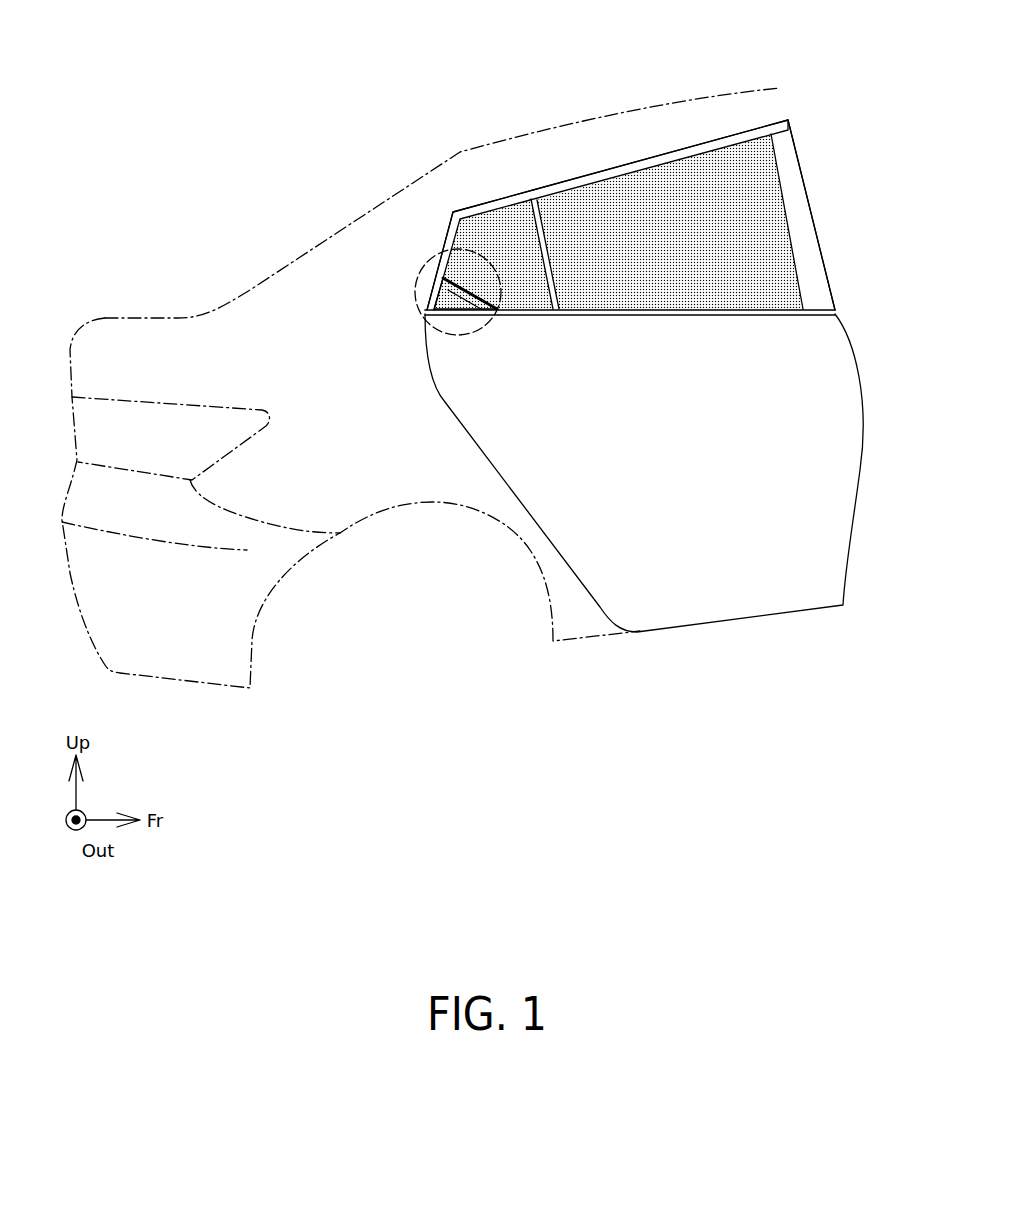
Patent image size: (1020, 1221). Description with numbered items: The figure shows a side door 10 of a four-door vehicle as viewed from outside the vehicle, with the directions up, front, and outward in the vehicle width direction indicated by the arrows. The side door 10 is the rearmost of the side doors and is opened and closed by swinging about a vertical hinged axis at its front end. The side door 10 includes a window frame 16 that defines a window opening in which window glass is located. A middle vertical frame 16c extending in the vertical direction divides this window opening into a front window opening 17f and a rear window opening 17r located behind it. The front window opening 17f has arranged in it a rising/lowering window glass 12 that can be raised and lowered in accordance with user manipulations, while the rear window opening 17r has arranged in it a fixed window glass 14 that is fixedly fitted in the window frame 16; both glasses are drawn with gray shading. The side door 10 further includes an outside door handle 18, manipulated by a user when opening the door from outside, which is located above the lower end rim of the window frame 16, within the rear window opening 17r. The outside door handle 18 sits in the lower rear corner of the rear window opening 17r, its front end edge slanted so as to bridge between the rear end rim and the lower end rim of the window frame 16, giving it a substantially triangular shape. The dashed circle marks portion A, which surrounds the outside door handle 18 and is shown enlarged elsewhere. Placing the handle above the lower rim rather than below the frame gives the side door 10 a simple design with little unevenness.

The side door 10 is at (725, 573).
The rising/lowering window glass 12 is at (760, 210).
The fixed window glass 14 is at (472, 232).
The window frame 16 is at (667, 148).
The middle vertical frame 16c is at (543, 233).
The rear window opening 17r is at (503, 203).
The front window opening 17f is at (731, 140).
The outside door handle 18 is at (450, 300).
The portion A is at (417, 278).